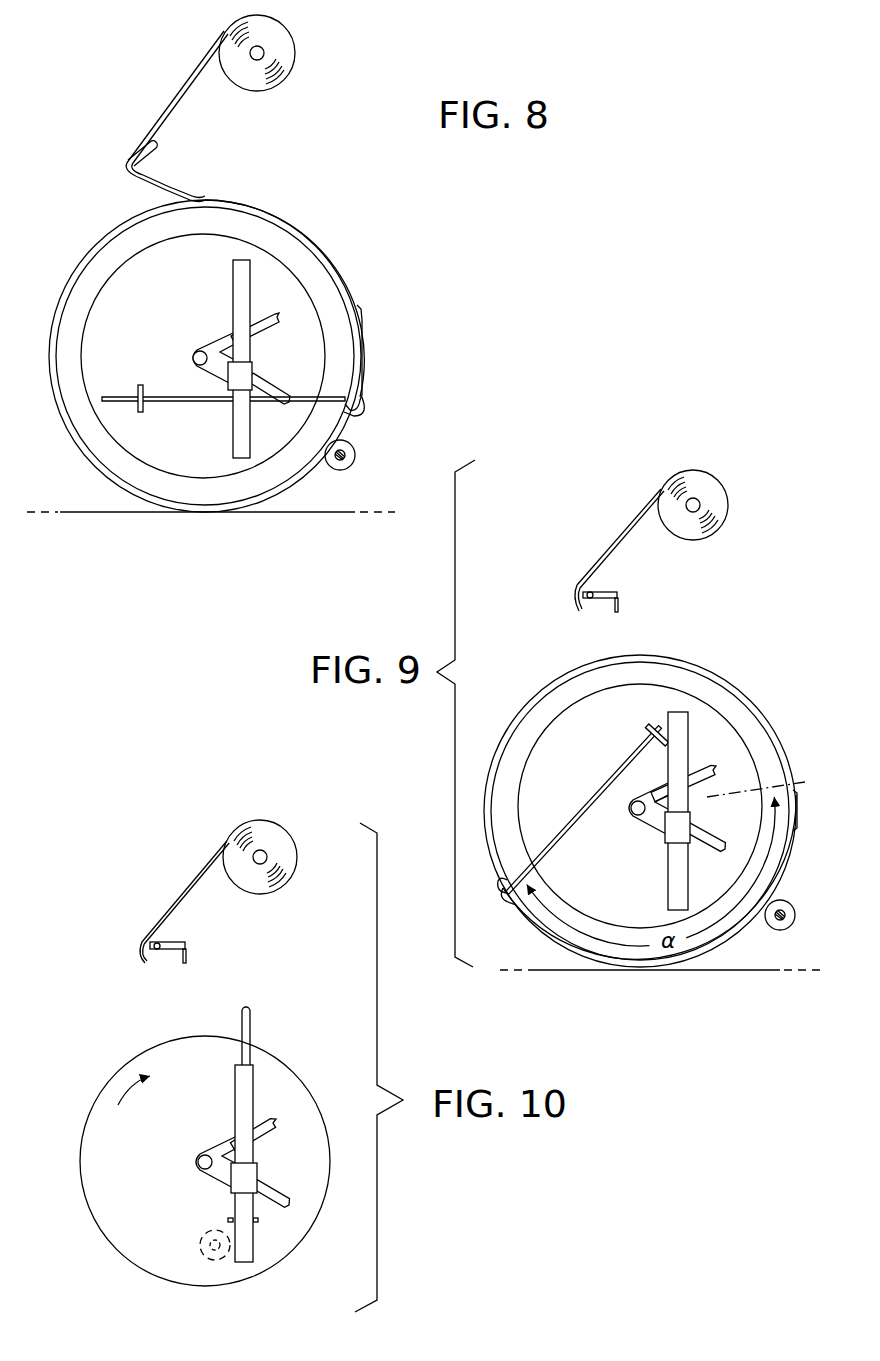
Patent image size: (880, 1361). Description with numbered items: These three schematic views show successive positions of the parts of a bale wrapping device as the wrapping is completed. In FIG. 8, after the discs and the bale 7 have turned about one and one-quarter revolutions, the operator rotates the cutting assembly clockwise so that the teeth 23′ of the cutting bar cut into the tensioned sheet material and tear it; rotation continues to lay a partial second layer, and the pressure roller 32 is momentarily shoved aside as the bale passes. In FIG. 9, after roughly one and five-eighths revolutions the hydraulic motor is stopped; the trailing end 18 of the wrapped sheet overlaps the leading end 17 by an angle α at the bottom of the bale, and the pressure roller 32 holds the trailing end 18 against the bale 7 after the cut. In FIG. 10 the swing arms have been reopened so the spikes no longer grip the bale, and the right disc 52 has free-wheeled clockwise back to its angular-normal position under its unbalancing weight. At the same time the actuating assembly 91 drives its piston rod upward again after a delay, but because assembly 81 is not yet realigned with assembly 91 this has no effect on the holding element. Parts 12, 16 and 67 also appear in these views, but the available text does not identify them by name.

In FIG. 8, the bale 7 is at (100, 267).
In FIG. 9, the bale 7 is at (543, 700).
In FIG. 8, the tape spool 12 is at (296, 47).
In FIG. 9, the tape spool 12 is at (727, 512).
In FIG. 10, the tape spool 12 is at (270, 822).
In FIG. 8, the tape 16 is at (156, 110).
In FIG. 8, the leading portion of the sheet material 17 is at (363, 377).
In FIG. 9, the leading portion of the sheet material 17 is at (507, 900).
In FIG. 9, the trailing portion of the wrapped sheet material 18 is at (798, 827).
In FIG. 8, the teeth 23′ is at (123, 163).
In FIG. 9, the teeth 23′ is at (619, 608).
In FIG. 10, the teeth 23′ is at (189, 958).
In FIG. 8, the pressure roller 32 is at (356, 457).
In FIG. 9, the pressure roller 32 is at (796, 916).
In FIG. 10, the pressure roller 32 is at (207, 1231).
In FIG. 8, the right disc 52 is at (97, 320).
In FIG. 9, the right disc 52 is at (540, 748).
In FIG. 10, the right disc 52 is at (95, 1122).
In FIG. 8, the link rod 67 is at (267, 337).
In FIG. 9, the link rod 67 is at (698, 784).
In FIG. 10, the link rod 67 is at (268, 1136).
In FIG. 8, the assembly 81 is at (201, 405).
In FIG. 9, the assembly 81 is at (597, 810).
In FIG. 8, the actuating assembly 91 is at (230, 300).
In FIG. 9, the actuating assembly 91 is at (690, 737).
In FIG. 10, the actuating assembly 91 is at (233, 1107).